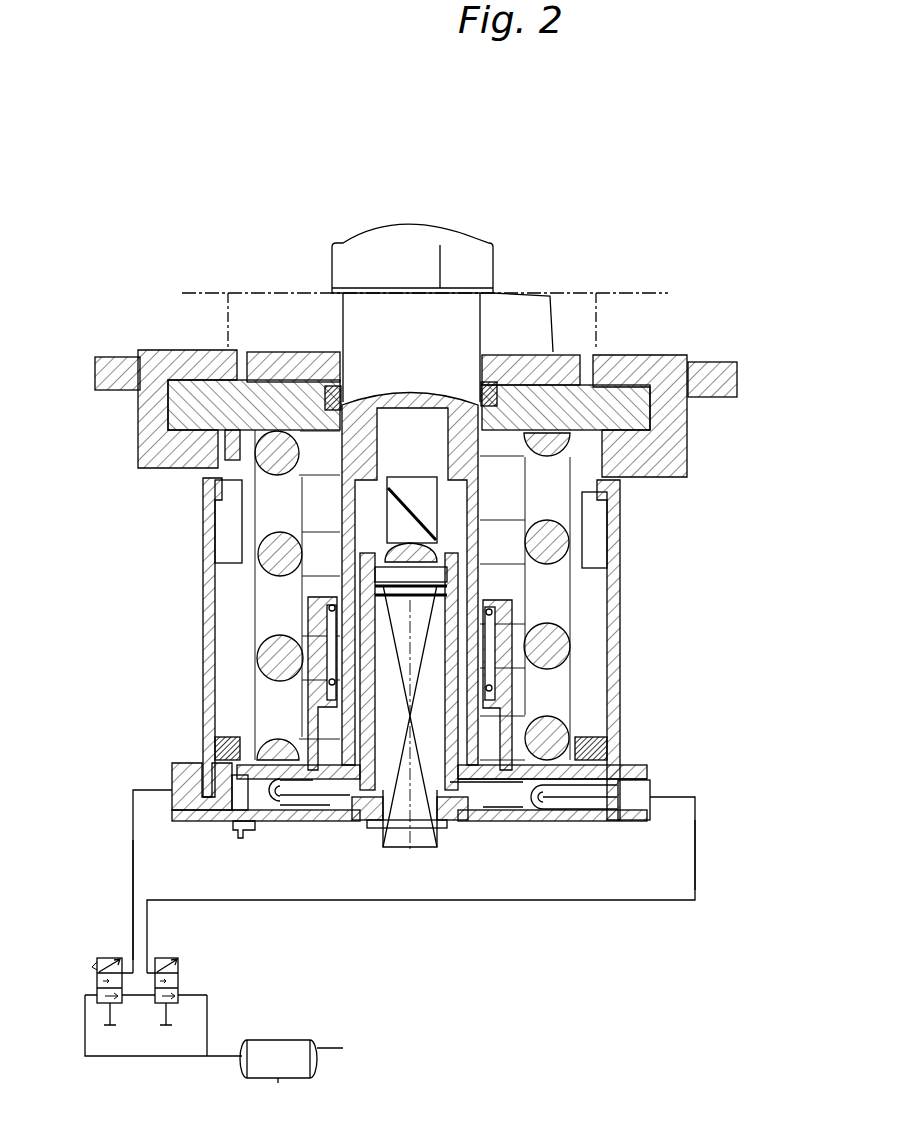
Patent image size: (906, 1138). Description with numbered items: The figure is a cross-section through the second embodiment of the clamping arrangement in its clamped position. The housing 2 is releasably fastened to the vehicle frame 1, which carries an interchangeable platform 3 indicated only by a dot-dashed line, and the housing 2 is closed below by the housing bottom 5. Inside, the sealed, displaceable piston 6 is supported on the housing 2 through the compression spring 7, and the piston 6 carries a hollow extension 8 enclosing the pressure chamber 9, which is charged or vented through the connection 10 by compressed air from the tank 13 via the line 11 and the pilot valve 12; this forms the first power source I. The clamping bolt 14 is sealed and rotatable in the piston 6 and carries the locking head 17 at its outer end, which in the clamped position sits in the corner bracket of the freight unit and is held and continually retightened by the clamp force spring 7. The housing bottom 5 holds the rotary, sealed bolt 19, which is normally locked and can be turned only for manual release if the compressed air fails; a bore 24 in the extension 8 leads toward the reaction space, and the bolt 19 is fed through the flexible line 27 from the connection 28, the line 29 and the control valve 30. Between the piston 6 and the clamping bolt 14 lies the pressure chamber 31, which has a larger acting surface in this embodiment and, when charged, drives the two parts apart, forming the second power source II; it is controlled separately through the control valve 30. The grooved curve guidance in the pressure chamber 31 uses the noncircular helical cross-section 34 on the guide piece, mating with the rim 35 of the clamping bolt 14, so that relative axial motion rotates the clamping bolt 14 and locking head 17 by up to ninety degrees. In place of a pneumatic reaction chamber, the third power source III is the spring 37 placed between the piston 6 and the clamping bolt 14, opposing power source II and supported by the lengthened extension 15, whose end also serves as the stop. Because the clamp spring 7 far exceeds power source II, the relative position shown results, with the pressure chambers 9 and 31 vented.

The vehicle frame 1 is at (713, 378).
The housing 2 is at (556, 400).
The interchangeable platform 3 is at (628, 318).
The housing bottom 5 is at (522, 817).
The piston 6 is at (558, 775).
The compression spring 7 is at (285, 745).
The hollow extension 8 is at (365, 628).
The pressure chamber 9 is at (255, 800).
The connection 10 is at (187, 787).
The line 11 is at (133, 833).
The pilot valve 12 is at (100, 981).
The tank 13 is at (287, 1053).
The clamping bolt 14 is at (388, 350).
The hollow extension 15 is at (470, 760).
The locking head 17 is at (398, 231).
The bolt 19 is at (417, 808).
The bore 24 is at (370, 575).
The flexible line 27 is at (478, 795).
The connection 28 is at (630, 802).
The line 29 is at (657, 900).
The control valve 30 is at (180, 981).
The pressure chamber 31 is at (448, 548).
The noncircular helical cross-section 34 is at (453, 517).
The rim 35 is at (328, 468).
The spring 37 is at (513, 612).
The first power source I is at (124, 900).
The second power source II is at (708, 855).
The third power source III is at (483, 668).